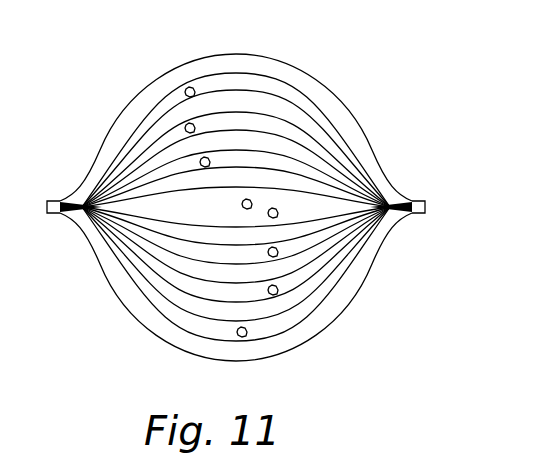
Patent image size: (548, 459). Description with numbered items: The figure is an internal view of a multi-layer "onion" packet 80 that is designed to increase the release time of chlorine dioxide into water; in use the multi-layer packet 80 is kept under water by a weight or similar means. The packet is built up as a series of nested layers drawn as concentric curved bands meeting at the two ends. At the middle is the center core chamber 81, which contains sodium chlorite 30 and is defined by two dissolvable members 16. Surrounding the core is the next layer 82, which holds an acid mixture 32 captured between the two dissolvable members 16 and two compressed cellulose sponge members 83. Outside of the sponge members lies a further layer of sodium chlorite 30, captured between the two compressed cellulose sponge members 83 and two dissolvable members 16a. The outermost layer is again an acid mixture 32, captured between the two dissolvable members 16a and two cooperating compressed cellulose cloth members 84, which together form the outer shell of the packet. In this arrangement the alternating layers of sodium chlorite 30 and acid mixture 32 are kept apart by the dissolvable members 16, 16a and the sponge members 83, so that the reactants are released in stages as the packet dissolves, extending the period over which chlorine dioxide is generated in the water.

The multi-layer packet 80 is at (400, 98).
The dissolvable members 16 is at (97, 243).
The dissolvable members 16a is at (233, 100).
The sodium chlorite 30 is at (186, 128).
The acid mixture 32 is at (186, 93).
The center core chamber 81 is at (137, 205).
The next layer 82 is at (294, 167).
The compressed cellulose sponge members 83 is at (250, 143).
The compressed cellulose cloth members 84 is at (207, 62).